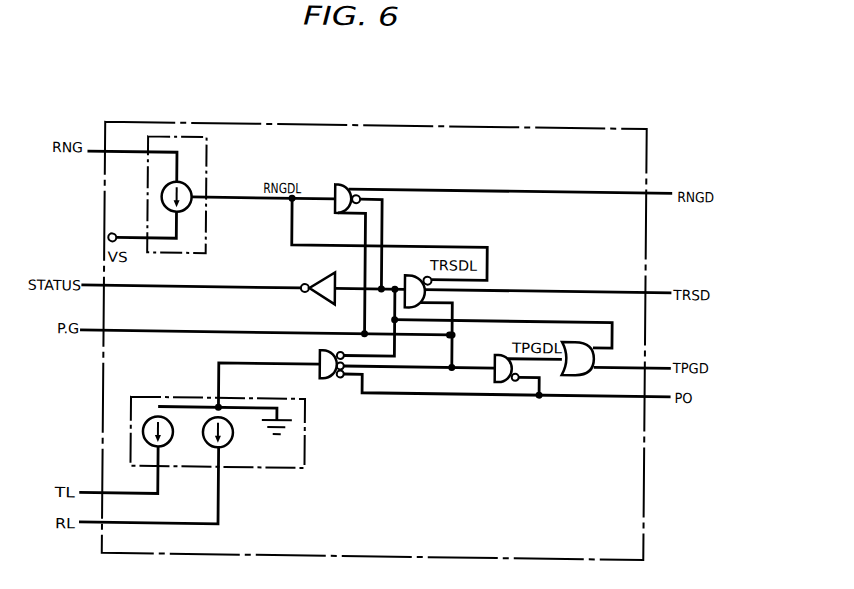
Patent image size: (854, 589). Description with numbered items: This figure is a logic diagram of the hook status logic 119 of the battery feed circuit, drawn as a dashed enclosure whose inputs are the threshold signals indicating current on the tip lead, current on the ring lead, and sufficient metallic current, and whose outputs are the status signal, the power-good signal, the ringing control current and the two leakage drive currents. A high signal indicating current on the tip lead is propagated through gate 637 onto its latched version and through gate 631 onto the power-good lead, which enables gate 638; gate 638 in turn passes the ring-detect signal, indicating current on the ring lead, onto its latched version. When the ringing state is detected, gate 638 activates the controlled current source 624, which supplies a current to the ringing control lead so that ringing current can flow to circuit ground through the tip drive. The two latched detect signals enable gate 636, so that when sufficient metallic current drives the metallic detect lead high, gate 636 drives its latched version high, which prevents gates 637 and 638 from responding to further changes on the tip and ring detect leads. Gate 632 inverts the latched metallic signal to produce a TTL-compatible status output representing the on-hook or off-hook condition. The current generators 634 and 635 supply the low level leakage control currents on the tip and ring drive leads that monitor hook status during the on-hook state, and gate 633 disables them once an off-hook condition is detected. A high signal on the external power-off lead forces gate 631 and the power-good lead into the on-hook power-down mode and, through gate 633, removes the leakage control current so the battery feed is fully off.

The hook status logic 119 is at (490, 120).
The controlled current source 624 is at (202, 169).
The gate 638 is at (334, 186).
The gate 636 is at (417, 259).
The gate 632 is at (326, 303).
The gate 633 is at (320, 351).
The gate 631 is at (497, 380).
The gate 637 is at (587, 376).
The current generator 634 is at (174, 433).
The current generator 635 is at (234, 433).